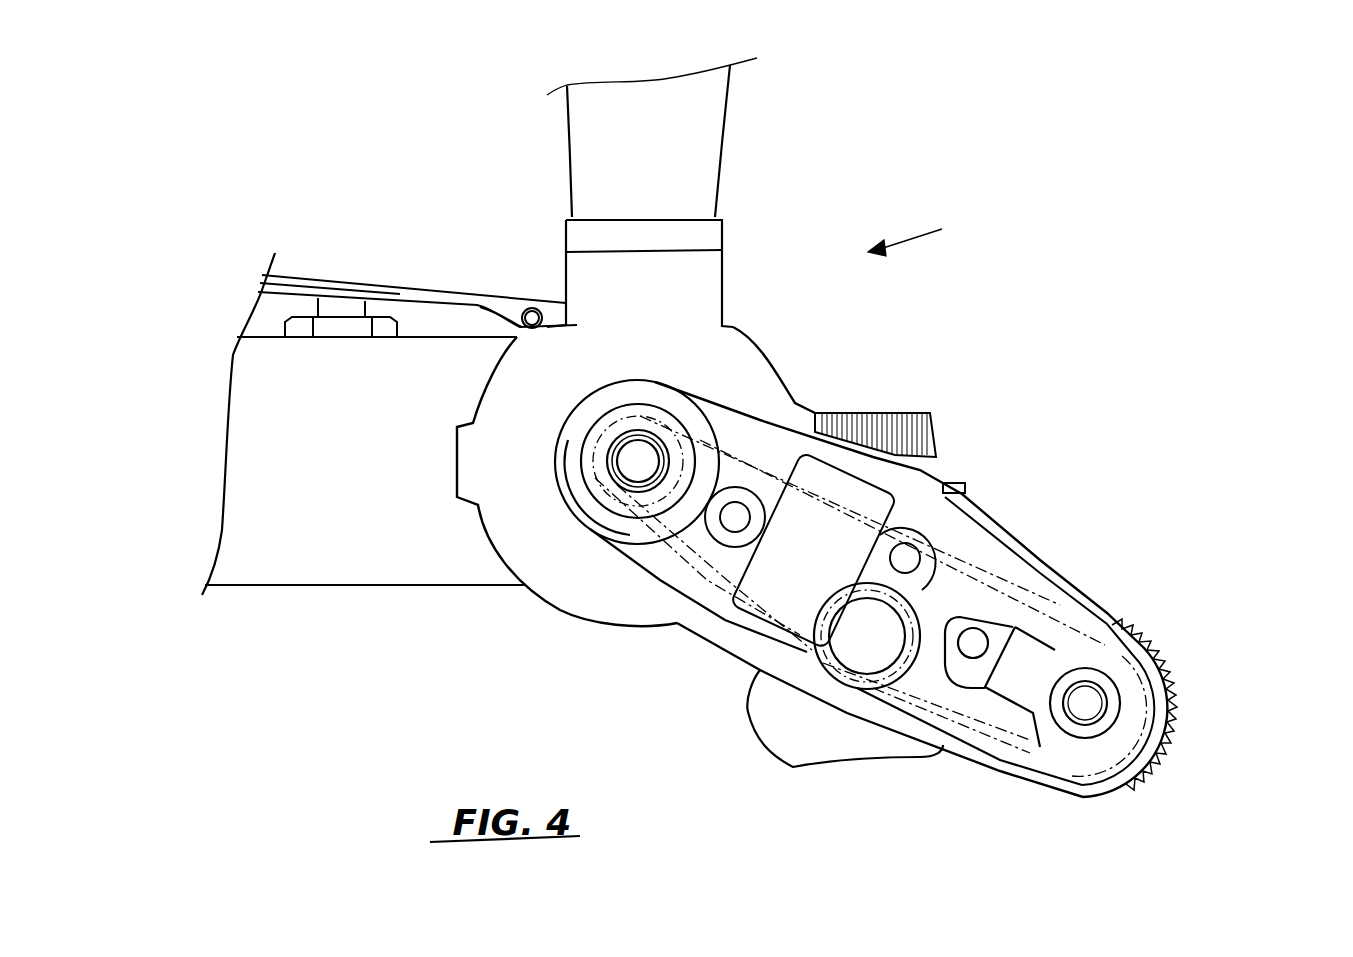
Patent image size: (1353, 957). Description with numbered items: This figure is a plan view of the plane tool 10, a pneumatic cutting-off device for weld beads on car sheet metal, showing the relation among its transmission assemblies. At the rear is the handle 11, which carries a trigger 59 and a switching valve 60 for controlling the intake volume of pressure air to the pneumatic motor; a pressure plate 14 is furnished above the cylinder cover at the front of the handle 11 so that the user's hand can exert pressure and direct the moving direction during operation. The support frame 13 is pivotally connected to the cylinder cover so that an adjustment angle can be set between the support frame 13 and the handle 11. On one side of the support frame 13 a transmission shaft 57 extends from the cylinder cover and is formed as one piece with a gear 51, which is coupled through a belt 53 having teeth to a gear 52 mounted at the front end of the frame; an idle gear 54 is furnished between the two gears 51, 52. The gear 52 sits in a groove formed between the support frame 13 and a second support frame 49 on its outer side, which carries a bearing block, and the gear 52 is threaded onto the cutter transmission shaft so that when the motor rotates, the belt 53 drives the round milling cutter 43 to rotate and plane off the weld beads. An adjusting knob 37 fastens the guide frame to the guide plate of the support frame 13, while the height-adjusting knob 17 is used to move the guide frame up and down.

The plane tool 10 is at (922, 227).
The handle 11 is at (365, 552).
The support frame 13 is at (753, 382).
The pressure plate 14 is at (693, 272).
The height-adjusting knob 17 is at (918, 420).
The adjusting knob 37 is at (792, 718).
The round milling cutter 43 is at (1157, 643).
The support frame 49 is at (1027, 660).
The gear 51 is at (637, 462).
The gear 52 is at (1143, 698).
The belt with teeth 53 is at (997, 742).
The idle gear 54 is at (867, 642).
The transmission shaft 57 is at (637, 462).
The trigger 59 is at (427, 293).
The switching valve 60 is at (345, 317).